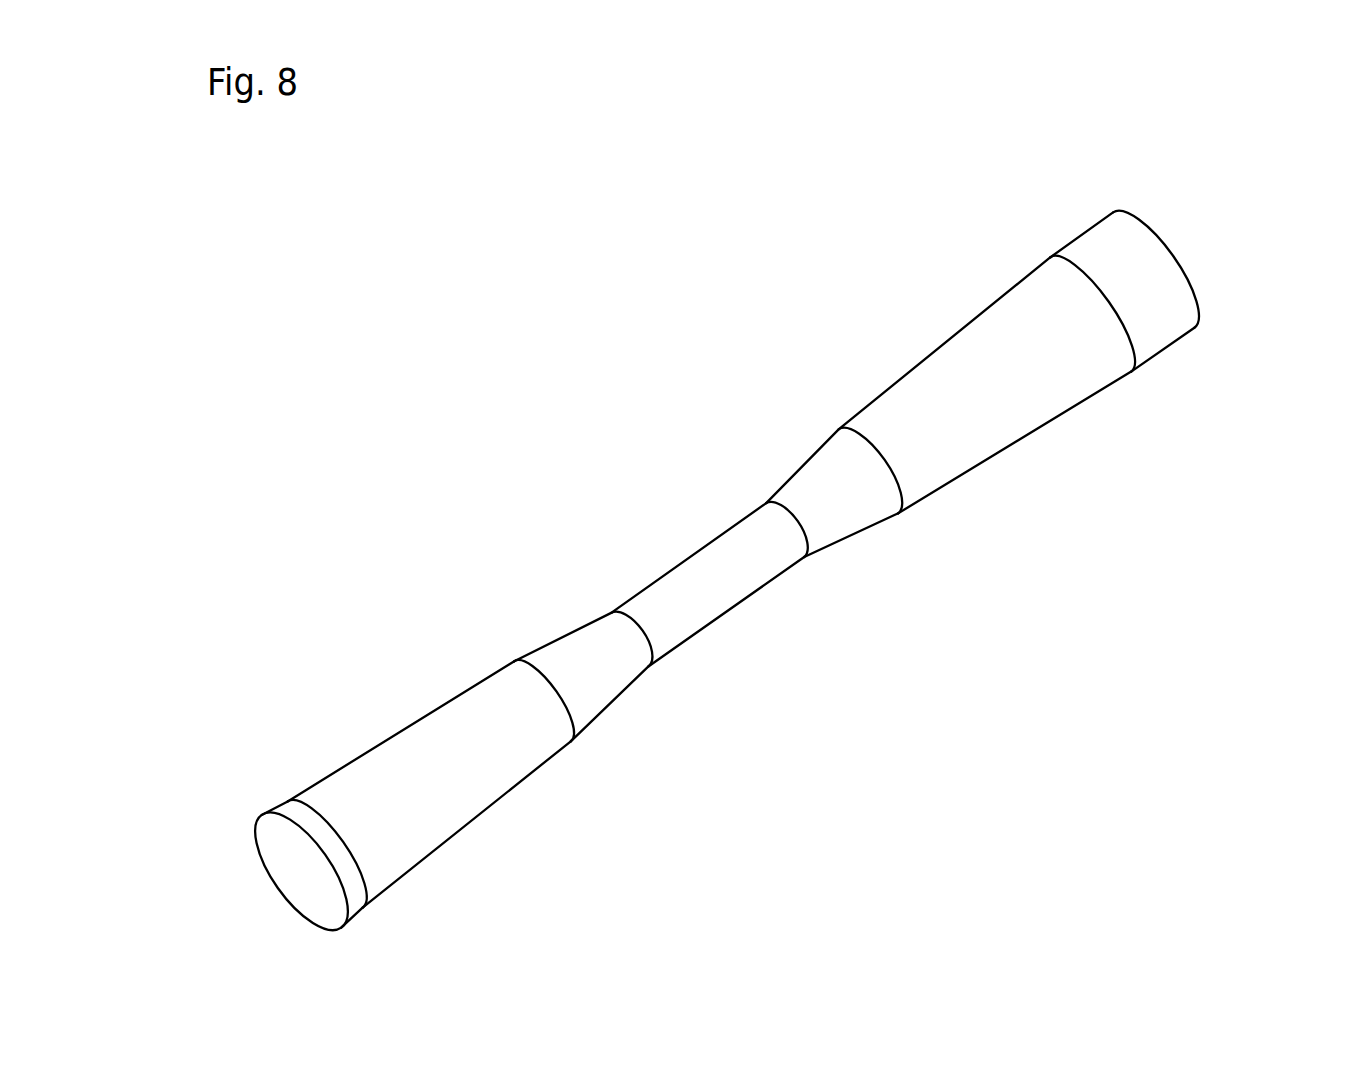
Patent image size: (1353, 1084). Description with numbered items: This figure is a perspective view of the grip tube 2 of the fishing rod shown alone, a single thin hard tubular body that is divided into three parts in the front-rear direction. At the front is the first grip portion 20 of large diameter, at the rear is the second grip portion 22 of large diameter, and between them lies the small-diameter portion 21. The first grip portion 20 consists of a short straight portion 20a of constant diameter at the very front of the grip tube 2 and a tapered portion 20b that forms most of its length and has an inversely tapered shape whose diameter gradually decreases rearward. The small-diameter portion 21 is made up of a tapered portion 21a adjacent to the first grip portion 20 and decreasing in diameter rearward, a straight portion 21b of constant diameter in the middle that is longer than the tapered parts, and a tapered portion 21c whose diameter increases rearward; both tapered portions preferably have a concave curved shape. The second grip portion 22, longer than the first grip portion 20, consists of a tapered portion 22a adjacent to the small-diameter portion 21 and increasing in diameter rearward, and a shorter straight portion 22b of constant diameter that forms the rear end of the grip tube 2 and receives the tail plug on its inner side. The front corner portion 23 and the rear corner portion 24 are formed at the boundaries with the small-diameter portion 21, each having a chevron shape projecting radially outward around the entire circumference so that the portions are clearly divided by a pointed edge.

The grip tube 2 is at (645, 397).
The first grip portion 20 is at (442, 547).
The straight portion 20a is at (273, 813).
The tapered portion 20b is at (405, 722).
The small-diameter portion 21 is at (907, 687).
The tapered portion 21a is at (617, 697).
The straight portion 21b is at (738, 608).
The tapered portion 21c is at (850, 536).
The second grip portion 22 is at (1008, 100).
The tapered portion 22a is at (930, 353).
The straight portion 22b is at (1073, 238).
The corner portion 23 is at (558, 692).
The corner portion 24 is at (888, 458).